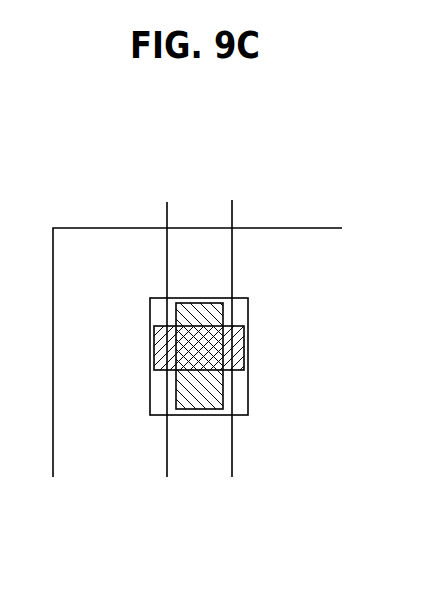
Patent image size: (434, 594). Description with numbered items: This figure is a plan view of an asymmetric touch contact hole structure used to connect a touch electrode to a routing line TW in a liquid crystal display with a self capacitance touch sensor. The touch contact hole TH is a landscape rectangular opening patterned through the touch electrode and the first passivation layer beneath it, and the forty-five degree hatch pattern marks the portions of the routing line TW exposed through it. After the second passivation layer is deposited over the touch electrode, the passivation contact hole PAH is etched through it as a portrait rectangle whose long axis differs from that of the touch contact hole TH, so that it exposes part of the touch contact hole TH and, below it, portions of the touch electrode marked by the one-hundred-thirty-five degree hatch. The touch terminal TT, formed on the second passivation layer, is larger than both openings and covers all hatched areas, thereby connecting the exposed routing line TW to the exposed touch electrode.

The routing line TW is at (232, 208).
The touch terminal TT is at (250, 395).
The passivation contact hole PAH is at (222, 313).
The touch contact hole TH is at (245, 345).